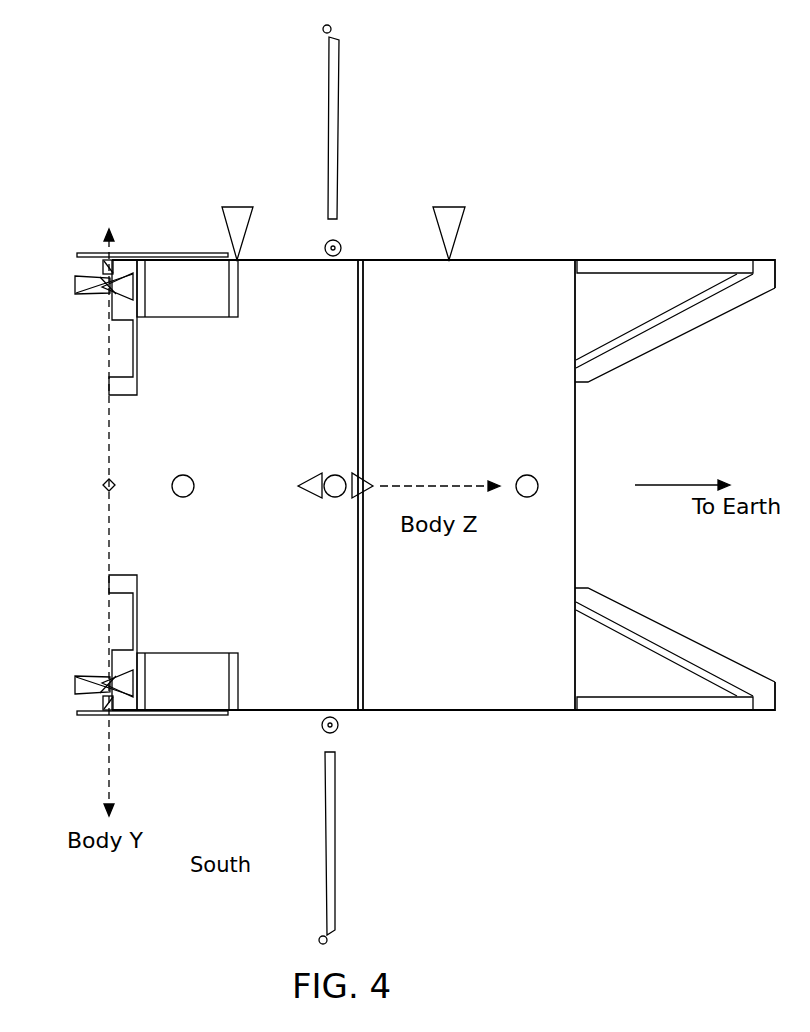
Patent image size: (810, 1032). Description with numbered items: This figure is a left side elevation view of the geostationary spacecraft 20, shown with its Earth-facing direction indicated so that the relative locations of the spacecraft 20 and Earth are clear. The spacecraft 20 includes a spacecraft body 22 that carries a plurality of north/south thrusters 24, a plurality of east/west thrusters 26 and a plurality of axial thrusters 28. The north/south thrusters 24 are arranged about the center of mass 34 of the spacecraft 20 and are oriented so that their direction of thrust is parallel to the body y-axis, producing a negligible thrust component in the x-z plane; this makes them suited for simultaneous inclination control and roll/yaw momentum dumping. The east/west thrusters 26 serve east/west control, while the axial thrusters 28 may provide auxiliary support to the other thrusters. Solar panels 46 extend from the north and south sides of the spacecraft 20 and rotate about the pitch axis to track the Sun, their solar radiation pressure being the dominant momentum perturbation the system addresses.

The spacecraft 20 is at (656, 153).
The spacecraft body 22 is at (537, 683).
The north/south thrusters 24 is at (237, 205).
The east/west thrusters 26 is at (185, 475).
The axial thrusters 28 is at (74, 285).
The center of mass 34 is at (333, 473).
The solar panels 46 is at (340, 85).